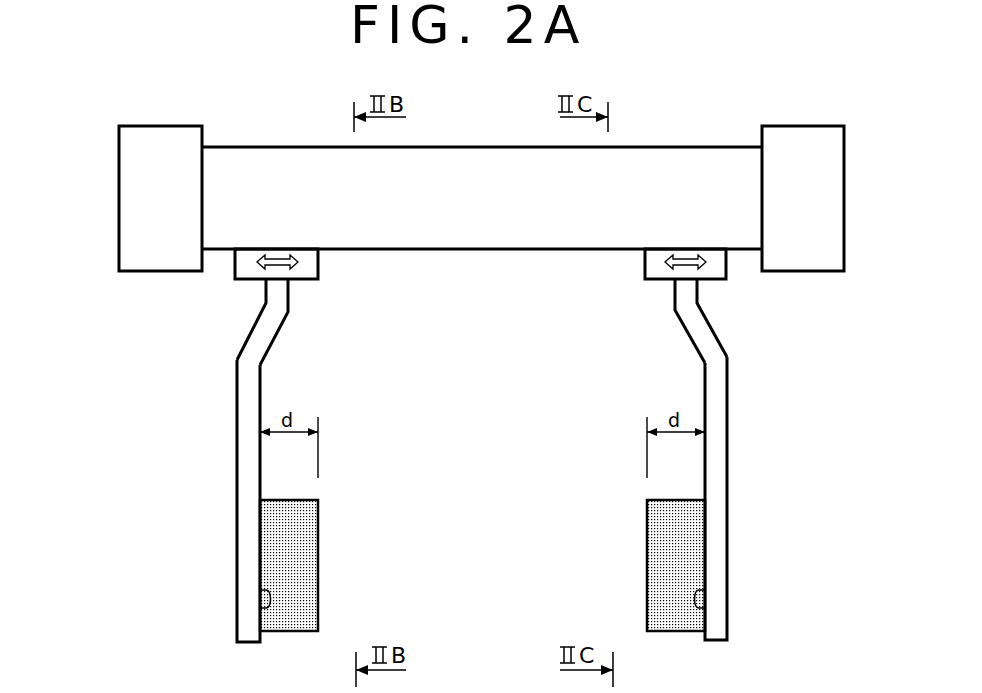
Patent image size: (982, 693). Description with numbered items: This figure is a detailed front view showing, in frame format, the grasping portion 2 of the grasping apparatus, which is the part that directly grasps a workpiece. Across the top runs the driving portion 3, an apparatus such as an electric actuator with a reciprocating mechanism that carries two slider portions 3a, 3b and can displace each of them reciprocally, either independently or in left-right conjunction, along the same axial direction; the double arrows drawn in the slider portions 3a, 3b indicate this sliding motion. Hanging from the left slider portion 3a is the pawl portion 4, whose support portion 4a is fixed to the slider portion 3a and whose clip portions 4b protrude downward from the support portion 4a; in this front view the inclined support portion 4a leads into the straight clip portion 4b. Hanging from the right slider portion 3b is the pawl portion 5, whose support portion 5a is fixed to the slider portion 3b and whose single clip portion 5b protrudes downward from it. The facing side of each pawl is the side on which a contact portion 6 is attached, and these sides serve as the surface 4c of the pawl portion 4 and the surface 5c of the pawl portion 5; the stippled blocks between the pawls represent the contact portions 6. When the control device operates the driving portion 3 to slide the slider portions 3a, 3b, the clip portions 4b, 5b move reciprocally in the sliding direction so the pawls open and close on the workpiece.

The grasping portion 2 is at (90, 123).
The driving portion 3 is at (470, 272).
The slider portion 3a is at (320, 262).
The slider portion 3b is at (644, 262).
The pawl portion 4 is at (257, 460).
The support portion 4a is at (275, 338).
The clip portion 4b is at (237, 492).
The surface 4c is at (262, 606).
The pawl portion 5 is at (710, 459).
The support portion 5a is at (688, 338).
The clip portion 5b is at (727, 492).
The surface 5c is at (703, 608).
The contact portion 6 is at (331, 553).